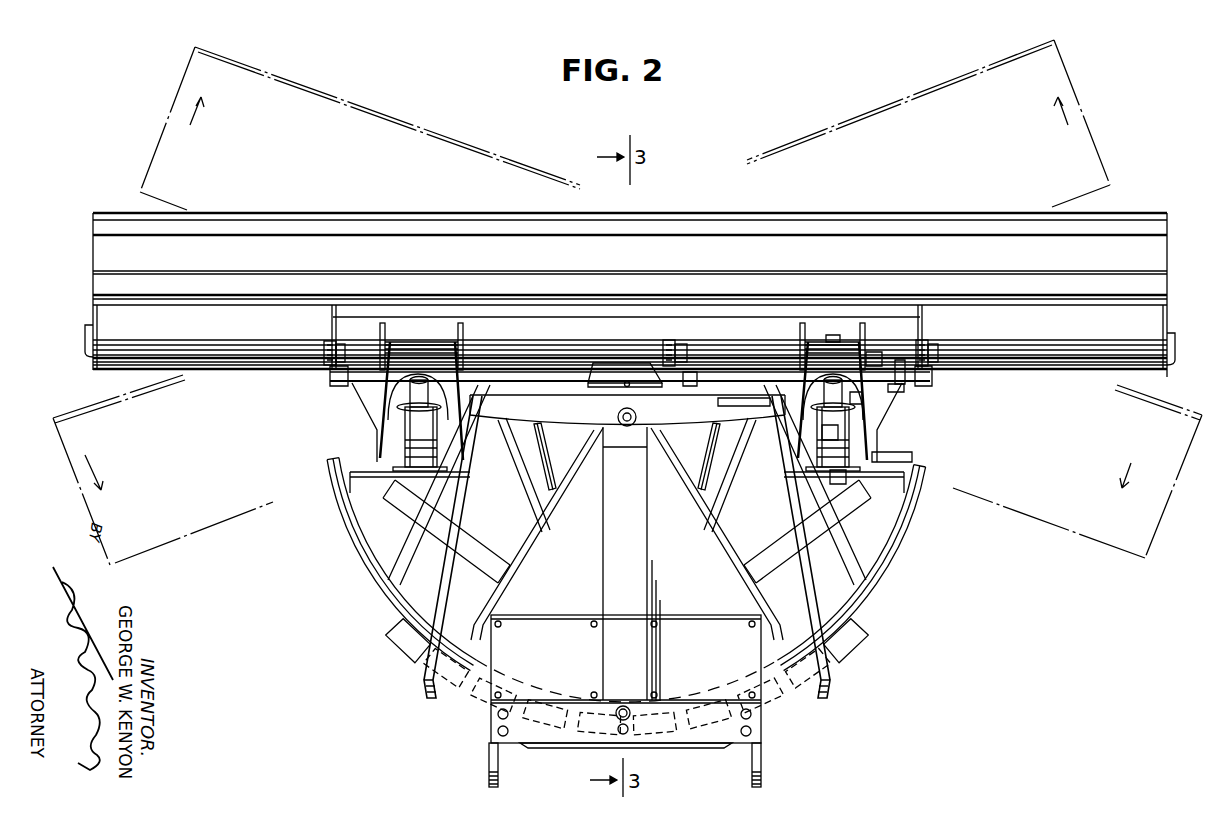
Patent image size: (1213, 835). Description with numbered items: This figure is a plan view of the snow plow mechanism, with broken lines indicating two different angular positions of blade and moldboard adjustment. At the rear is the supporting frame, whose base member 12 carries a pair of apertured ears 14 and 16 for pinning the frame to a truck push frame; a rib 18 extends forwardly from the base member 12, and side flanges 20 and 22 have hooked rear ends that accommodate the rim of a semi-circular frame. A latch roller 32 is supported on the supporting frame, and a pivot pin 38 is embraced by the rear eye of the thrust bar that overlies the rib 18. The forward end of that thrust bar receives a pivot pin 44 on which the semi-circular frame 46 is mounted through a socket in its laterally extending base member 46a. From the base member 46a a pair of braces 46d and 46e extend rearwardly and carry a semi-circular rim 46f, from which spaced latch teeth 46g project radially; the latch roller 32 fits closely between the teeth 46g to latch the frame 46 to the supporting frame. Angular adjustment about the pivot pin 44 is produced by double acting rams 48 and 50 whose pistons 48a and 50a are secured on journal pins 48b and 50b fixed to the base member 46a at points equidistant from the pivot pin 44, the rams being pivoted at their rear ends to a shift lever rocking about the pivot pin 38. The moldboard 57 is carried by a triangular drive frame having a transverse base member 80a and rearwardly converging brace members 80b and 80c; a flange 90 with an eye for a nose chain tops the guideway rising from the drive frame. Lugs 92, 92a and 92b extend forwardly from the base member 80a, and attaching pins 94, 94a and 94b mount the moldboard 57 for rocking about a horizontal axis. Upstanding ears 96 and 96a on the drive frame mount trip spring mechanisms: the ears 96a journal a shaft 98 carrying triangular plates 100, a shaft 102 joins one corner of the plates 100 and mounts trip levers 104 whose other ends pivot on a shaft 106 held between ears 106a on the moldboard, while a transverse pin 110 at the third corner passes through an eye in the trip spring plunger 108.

The base member 12 is at (704, 736).
The ear 14 is at (489, 756).
The ear 16 is at (761, 753).
The rib 18 is at (652, 466).
The flange 20 is at (478, 618).
The flange 22 is at (776, 618).
The latch roller 32 is at (628, 744).
The pivot pin 38 is at (623, 705).
The pivot pin 44 is at (617, 416).
The semi-circular frame 46 is at (636, 543).
The base member 46a is at (685, 416).
The brace 46d is at (402, 562).
The brace 46e is at (832, 538).
The semi-circular rim 46f is at (896, 560).
The latch teeth 46g is at (414, 652).
The double acting ram 48 is at (546, 500).
The piston 48a is at (547, 452).
The journal pin 48b is at (528, 408).
The double acting ram 50 is at (724, 500).
The piston 50a is at (712, 442).
The journal pin 50b is at (722, 403).
The moldboard 57 is at (1122, 236).
The base member 80a is at (896, 388).
The brace member 80b is at (497, 572).
The brace member 80c is at (757, 572).
The flange 90 is at (612, 372).
The lug 92 is at (338, 384).
The lug 92a is at (692, 378).
The lug 92b is at (934, 380).
The attaching pin 94 is at (312, 362).
The attaching pin 94a is at (668, 343).
The attaching pin 94b is at (940, 357).
The ear 96 is at (468, 388).
The ear 96a is at (782, 384).
The shaft 98 is at (882, 430).
The triangular plate 100 is at (824, 432).
The shaft 102 is at (905, 460).
The trip lever 104 is at (840, 484).
The shaft 106 is at (850, 356).
The ear 106a is at (868, 335).
The trip spring plunger 108 is at (856, 398).
The transverse pin 110 is at (880, 386).